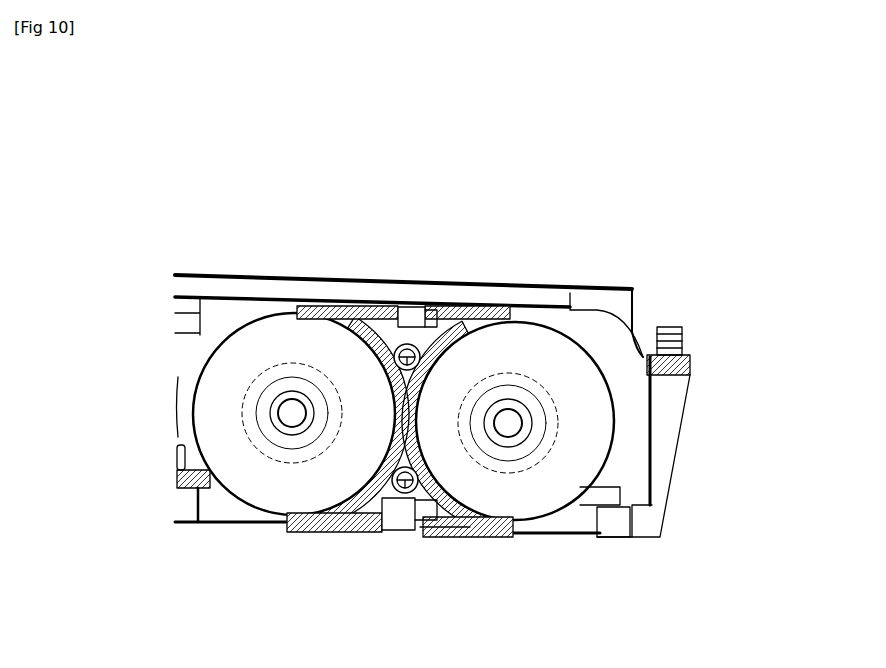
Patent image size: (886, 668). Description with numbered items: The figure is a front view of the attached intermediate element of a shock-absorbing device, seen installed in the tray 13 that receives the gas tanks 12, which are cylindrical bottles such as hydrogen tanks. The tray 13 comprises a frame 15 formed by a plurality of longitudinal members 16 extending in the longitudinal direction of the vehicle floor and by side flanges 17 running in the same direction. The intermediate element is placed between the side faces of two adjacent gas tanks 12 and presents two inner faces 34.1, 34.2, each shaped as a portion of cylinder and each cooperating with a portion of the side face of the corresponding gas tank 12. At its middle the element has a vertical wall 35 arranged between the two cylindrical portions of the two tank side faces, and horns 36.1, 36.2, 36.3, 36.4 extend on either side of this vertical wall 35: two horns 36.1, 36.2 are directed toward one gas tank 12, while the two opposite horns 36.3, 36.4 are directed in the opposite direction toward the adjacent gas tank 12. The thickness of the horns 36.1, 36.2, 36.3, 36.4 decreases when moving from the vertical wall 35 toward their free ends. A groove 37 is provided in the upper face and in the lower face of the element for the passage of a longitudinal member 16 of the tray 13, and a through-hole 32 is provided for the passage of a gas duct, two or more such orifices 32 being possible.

The tray 13 is at (184, 220).
The gas tank 12 is at (261, 336).
The frame 15 is at (599, 285).
The longitudinal member 16 is at (407, 305).
The side flange 17 is at (677, 410).
The through-hole 32 is at (428, 525).
The inner face 34.1 is at (350, 346).
The inner face 34.2 is at (458, 353).
The vertical wall 35 is at (387, 383).
The horn 36.1 is at (360, 325).
The horn 36.2 is at (333, 537).
The horn 36.3 is at (465, 325).
The horn 36.4 is at (453, 530).
The groove 37 is at (427, 312).